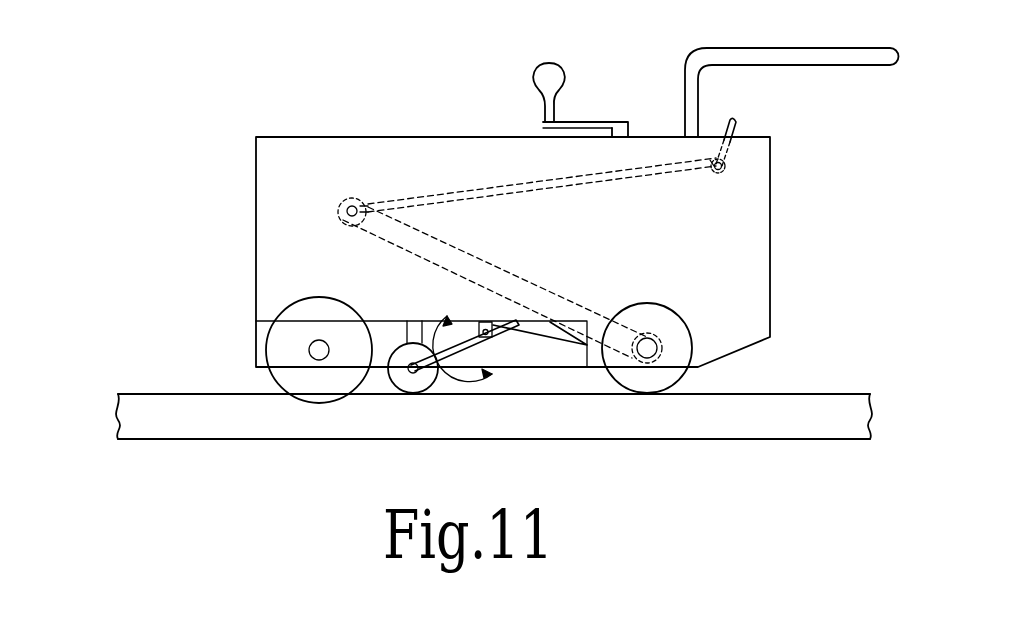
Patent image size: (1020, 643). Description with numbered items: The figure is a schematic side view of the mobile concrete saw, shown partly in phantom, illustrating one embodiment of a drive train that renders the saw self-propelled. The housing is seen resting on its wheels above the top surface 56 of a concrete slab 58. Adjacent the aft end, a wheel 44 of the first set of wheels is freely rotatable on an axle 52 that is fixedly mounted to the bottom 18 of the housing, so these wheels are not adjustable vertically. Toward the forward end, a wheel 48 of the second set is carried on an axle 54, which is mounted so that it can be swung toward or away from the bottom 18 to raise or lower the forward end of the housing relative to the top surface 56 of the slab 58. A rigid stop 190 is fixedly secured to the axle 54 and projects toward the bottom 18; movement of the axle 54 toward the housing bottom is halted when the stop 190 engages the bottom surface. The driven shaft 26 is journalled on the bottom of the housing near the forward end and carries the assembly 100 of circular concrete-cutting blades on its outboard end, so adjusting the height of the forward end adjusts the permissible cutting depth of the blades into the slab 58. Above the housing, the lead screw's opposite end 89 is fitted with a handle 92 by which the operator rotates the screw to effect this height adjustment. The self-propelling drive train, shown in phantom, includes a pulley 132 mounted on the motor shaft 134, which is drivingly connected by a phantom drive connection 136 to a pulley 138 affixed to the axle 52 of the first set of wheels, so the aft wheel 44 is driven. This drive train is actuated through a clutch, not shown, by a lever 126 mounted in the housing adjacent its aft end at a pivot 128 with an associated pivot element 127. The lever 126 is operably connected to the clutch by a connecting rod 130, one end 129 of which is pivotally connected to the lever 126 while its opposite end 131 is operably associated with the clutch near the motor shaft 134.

The bottom 18 is at (392, 324).
The driven shaft 26 is at (316, 350).
The wheel of first set 44 is at (687, 375).
The wheel of second set 48 is at (396, 385).
The axle 52 is at (647, 340).
The axle 54 is at (413, 374).
The top surface 56 is at (163, 393).
The concrete slab 58 is at (126, 407).
The opposite end of lead screw 89 is at (630, 133).
The handle 92 is at (542, 80).
The blade assembly 100 is at (262, 377).
The lever 126 is at (737, 118).
The pivot bushing 127 is at (726, 170).
The pivot pin 128 is at (724, 166).
The end of connecting rod 129 is at (714, 172).
The connecting rod 130 is at (607, 182).
The opposite end of connecting rod 131 is at (369, 207).
The pulley 132 is at (346, 200).
The motor shaft 134 is at (349, 214).
The drive link 136 is at (528, 268).
The pulley 138 is at (662, 346).
The rigid stop 190 is at (404, 341).